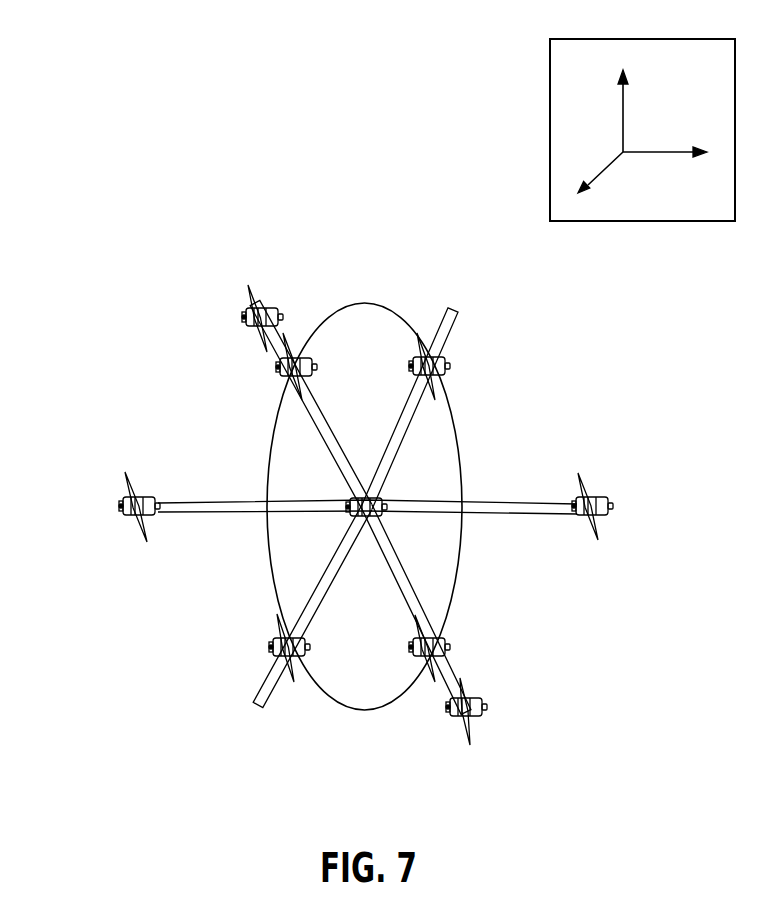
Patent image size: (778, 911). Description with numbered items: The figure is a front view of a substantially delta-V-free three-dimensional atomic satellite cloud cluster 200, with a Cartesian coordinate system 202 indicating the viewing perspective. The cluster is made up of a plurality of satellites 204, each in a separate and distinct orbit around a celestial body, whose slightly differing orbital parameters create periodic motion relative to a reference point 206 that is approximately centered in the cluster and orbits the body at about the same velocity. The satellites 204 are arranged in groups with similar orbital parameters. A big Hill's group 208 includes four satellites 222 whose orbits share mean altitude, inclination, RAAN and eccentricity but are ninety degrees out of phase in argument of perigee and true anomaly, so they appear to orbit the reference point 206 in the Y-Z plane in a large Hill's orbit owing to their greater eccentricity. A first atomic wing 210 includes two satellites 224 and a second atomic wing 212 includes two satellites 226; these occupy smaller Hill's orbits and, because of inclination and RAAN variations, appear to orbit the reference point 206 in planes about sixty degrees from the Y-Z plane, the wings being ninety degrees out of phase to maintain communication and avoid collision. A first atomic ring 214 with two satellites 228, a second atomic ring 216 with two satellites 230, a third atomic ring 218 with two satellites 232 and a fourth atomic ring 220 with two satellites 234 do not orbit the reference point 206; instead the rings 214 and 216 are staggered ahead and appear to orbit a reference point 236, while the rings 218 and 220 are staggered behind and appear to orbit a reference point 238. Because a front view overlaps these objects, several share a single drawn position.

The satellite cloud cluster 200 is at (94, 88).
The Cartesian coordinate system 202 is at (650, 39).
The satellites 204 is at (620, 708).
The reference point 206 is at (480, 505).
The big Hill's group 208 is at (472, 500).
The first atomic wing 210 is at (403, 600).
The second atomic wing 212 is at (332, 560).
The first atomic ring 214 is at (413, 496).
The second atomic ring 216 is at (413, 496).
The third atomic ring 218 is at (413, 496).
The fourth atomic ring 220 is at (373, 307).
The satellites 222 is at (123, 497).
The satellites 224 is at (248, 312).
The satellites 226 is at (377, 500).
The satellites 228 is at (363, 507).
The satellites 230 is at (362, 507).
The satellites 232 is at (452, 360).
The satellites 234 is at (282, 374).
The reference point 236 is at (480, 505).
The reference point 238 is at (480, 505).